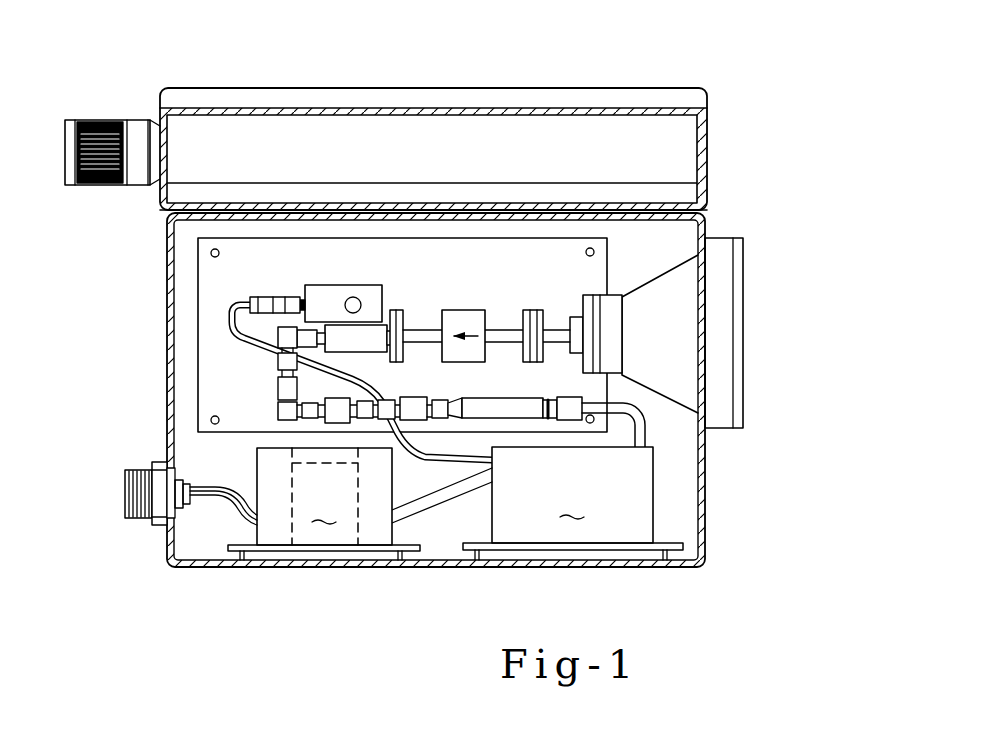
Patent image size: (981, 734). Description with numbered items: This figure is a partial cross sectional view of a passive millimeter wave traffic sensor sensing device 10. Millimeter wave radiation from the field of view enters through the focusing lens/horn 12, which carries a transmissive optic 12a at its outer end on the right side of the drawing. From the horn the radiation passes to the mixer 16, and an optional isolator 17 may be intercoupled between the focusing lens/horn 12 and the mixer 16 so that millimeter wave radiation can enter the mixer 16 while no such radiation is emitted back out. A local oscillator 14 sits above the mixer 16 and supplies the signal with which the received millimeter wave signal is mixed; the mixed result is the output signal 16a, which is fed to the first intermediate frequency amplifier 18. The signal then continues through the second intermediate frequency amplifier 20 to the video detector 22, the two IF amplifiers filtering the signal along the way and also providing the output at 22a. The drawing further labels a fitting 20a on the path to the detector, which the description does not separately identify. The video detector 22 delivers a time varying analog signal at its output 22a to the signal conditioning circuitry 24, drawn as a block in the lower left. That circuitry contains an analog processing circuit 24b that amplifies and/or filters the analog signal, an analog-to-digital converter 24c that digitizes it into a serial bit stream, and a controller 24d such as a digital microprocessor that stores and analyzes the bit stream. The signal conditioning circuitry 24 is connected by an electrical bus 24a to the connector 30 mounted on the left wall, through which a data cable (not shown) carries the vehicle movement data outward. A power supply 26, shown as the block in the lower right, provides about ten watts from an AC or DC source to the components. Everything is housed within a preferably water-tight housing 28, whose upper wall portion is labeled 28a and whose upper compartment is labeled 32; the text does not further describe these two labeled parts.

The passive millimeter wave sensing device 10 is at (738, 86).
The focusing lens/horn 12 is at (752, 456).
The transmissive optic 12a is at (745, 305).
The local oscillator 14 is at (370, 290).
The mixer 16 is at (372, 344).
The output signal 16a is at (296, 318).
The isolator 17 is at (449, 309).
The first intermediate frequency amplifier 18 is at (271, 407).
The second intermediate frequency amplifier 20 is at (421, 430).
The hose fitting 20a is at (450, 394).
The video detector 22 is at (524, 405).
The output 22a is at (589, 393).
The signal conditioning circuitry 24 is at (324, 496).
The electrical bus 24a is at (222, 520).
The analog processing circuit 24b is at (375, 528).
The analog-to-digital converter 24c is at (271, 532).
The controller 24d is at (305, 455).
The power supply 26 is at (537, 503).
The housing 28 is at (163, 398).
The lower housing 28a is at (708, 222).
The connector 30 is at (124, 502).
The upper housing 32 is at (192, 95).